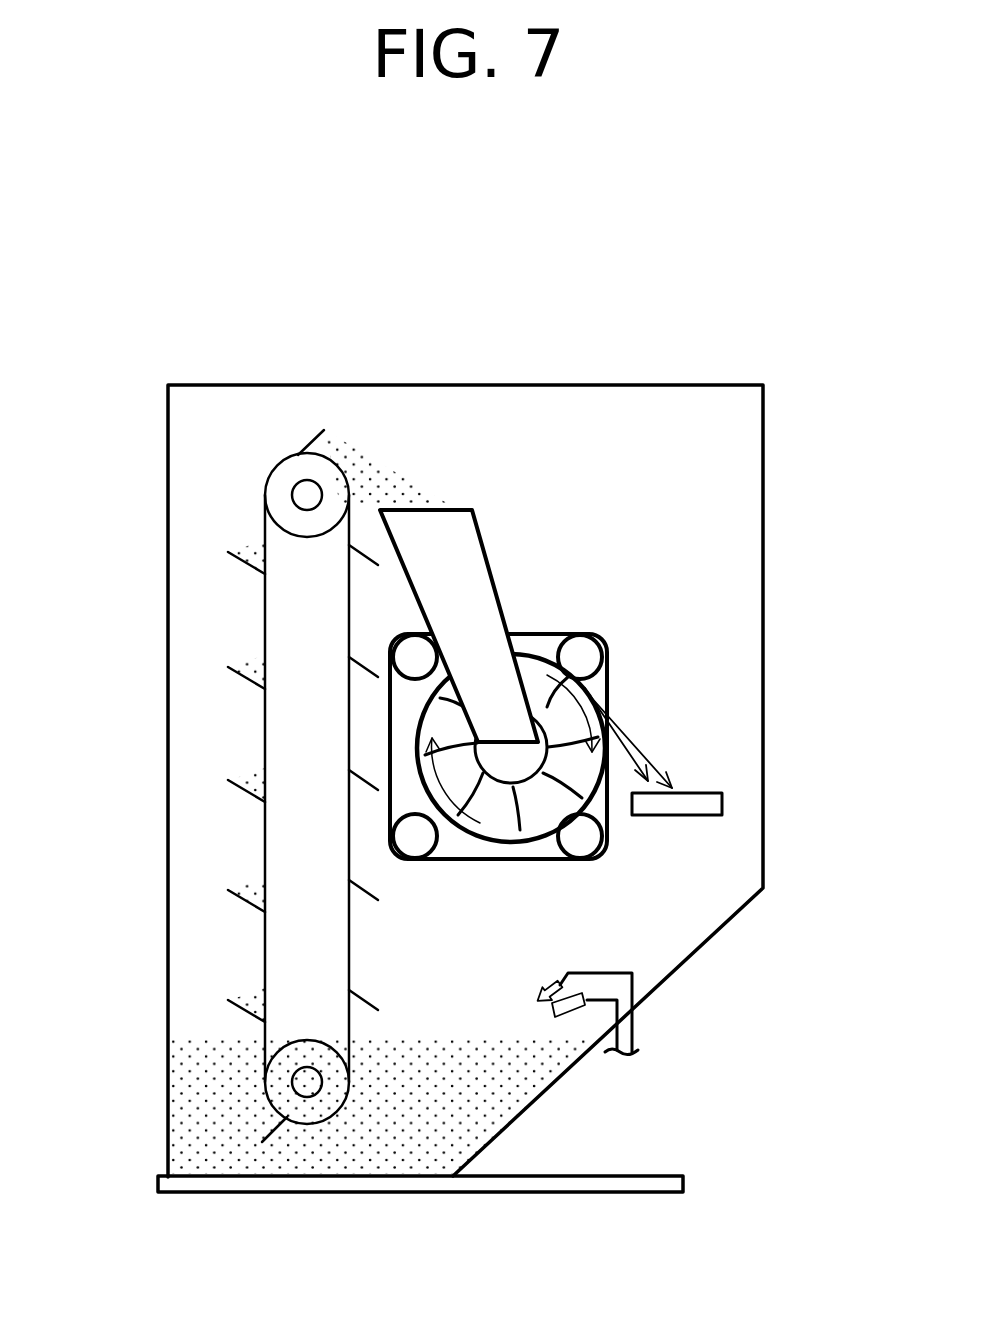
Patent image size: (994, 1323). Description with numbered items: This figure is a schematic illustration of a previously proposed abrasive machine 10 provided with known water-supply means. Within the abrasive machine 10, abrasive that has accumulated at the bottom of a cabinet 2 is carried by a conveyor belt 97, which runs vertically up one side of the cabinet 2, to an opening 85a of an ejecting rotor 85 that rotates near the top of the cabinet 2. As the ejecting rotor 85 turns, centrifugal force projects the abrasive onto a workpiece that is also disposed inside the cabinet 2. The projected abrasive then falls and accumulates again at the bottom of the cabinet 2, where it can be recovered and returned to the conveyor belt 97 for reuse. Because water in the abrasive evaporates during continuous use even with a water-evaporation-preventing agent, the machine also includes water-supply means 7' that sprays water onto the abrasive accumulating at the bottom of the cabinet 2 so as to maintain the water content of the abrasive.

The abrasive machine 10 is at (541, 313).
The cabinet 2 is at (763, 540).
The conveyor belt 97 is at (265, 612).
The ejecting rotor 85 is at (530, 655).
The opening 85a is at (510, 762).
The water-supply means 7' is at (678, 982).